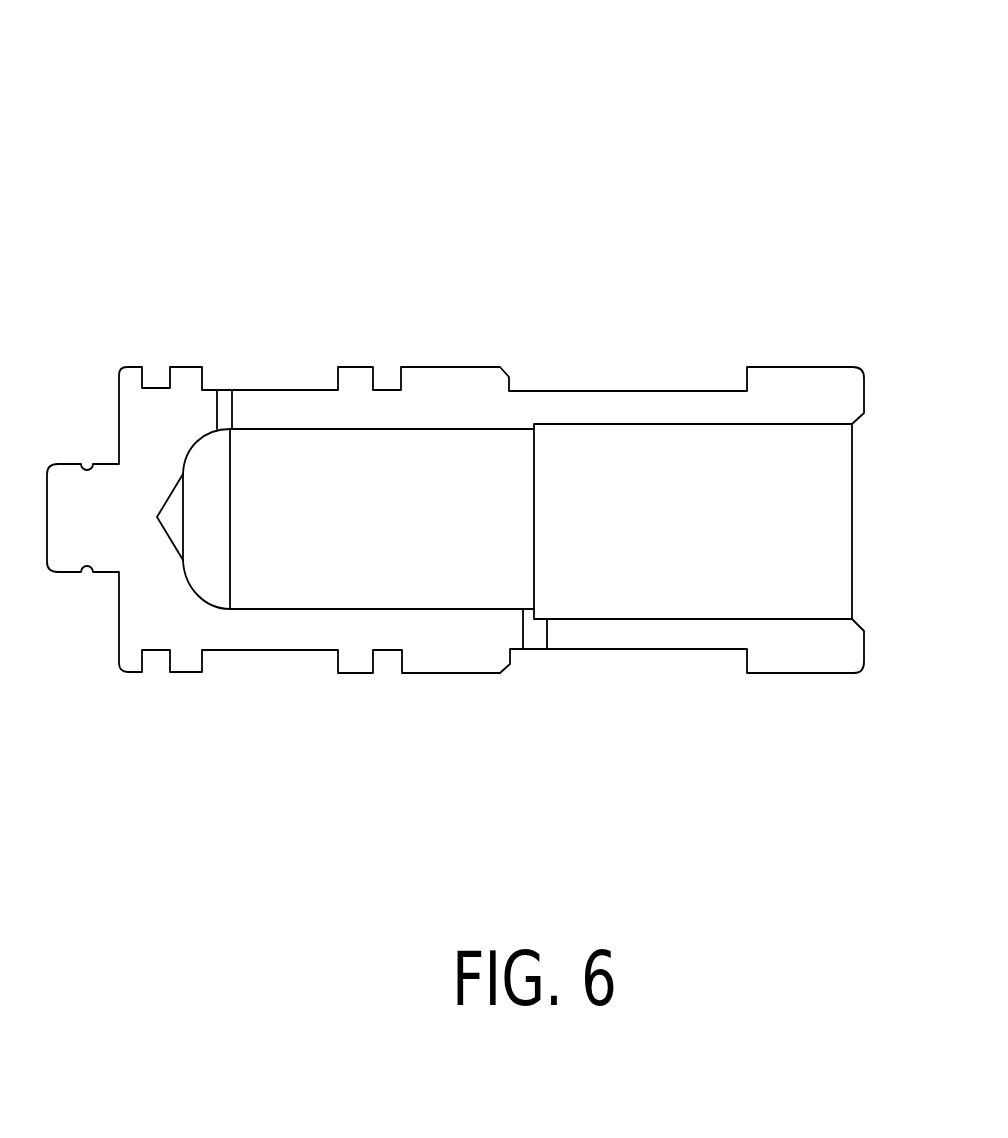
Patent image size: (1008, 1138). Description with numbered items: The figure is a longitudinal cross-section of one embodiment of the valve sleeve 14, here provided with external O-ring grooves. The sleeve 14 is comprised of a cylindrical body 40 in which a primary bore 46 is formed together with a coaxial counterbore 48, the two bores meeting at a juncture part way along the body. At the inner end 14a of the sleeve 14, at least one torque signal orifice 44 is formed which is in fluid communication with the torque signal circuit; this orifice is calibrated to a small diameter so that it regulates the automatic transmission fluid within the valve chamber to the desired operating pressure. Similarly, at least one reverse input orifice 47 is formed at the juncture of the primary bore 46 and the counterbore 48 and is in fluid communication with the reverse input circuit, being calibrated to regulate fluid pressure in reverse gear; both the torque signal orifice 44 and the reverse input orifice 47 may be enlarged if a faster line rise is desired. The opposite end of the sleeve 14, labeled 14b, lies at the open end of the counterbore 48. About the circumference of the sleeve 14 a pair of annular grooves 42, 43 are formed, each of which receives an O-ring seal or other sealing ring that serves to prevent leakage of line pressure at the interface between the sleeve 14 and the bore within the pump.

The sleeve 14 is at (487, 124).
The inner end 14a is at (109, 556).
The piston second end 14b is at (838, 660).
The cylindrical body 40 is at (493, 380).
The annular groove 42 is at (153, 377).
The annular groove 43 is at (377, 385).
The torque signal orifice 44 is at (222, 392).
The primary bore 46 is at (315, 428).
The reverse input orifice 47 is at (535, 642).
The counterbore 48 is at (670, 425).